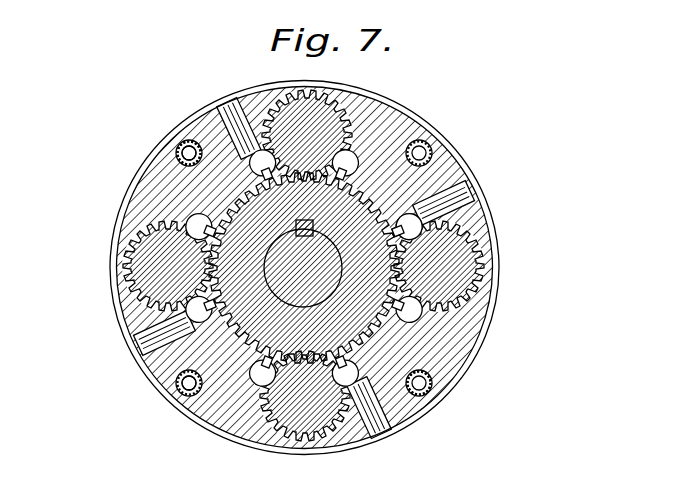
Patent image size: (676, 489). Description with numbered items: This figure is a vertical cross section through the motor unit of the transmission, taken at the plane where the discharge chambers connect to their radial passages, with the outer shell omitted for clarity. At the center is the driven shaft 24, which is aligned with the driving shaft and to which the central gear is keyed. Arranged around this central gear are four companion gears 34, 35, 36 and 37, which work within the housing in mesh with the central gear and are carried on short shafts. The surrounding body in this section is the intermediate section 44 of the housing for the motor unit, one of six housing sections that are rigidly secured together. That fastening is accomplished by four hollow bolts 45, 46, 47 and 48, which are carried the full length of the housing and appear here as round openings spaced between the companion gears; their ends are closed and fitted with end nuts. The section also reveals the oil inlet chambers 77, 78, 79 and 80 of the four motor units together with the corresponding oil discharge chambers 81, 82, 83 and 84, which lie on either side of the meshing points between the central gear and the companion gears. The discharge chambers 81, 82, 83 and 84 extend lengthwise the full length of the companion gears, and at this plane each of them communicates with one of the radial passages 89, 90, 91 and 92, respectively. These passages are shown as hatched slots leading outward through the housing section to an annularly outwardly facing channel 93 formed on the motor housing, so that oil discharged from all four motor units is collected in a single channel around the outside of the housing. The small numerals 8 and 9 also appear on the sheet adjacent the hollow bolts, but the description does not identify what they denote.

The driven shaft 24 is at (465, 312).
The companion gear 34 is at (455, 240).
The companion gear 35 is at (303, 410).
The companion gear 36 is at (120, 258).
The companion gear 37 is at (297, 98).
The intermediate section 44 is at (450, 143).
The hollow bolt 45 is at (408, 135).
The hollow bolt 46 is at (428, 373).
The hollow bolt 47 is at (165, 375).
The hollow bolt 48 is at (170, 143).
The bolt head 8 is at (160, 112).
The bolt 9 is at (172, 100).
The oil inlet chamber 77 is at (412, 300).
The oil inlet chamber 78 is at (250, 375).
The oil inlet chamber 79 is at (188, 218).
The oil inlet chamber 80 is at (350, 140).
The oil discharge chamber 81 is at (412, 214).
The oil discharge chamber 82 is at (404, 410).
The oil discharge chamber 83 is at (188, 302).
The oil discharge chamber 84 is at (240, 158).
The radial passage 89 is at (440, 193).
The radial passage 90 is at (362, 400).
The radial passage 91 is at (133, 335).
The radial passage 92 is at (220, 100).
The annularly outwardly facing channel 93 is at (458, 182).